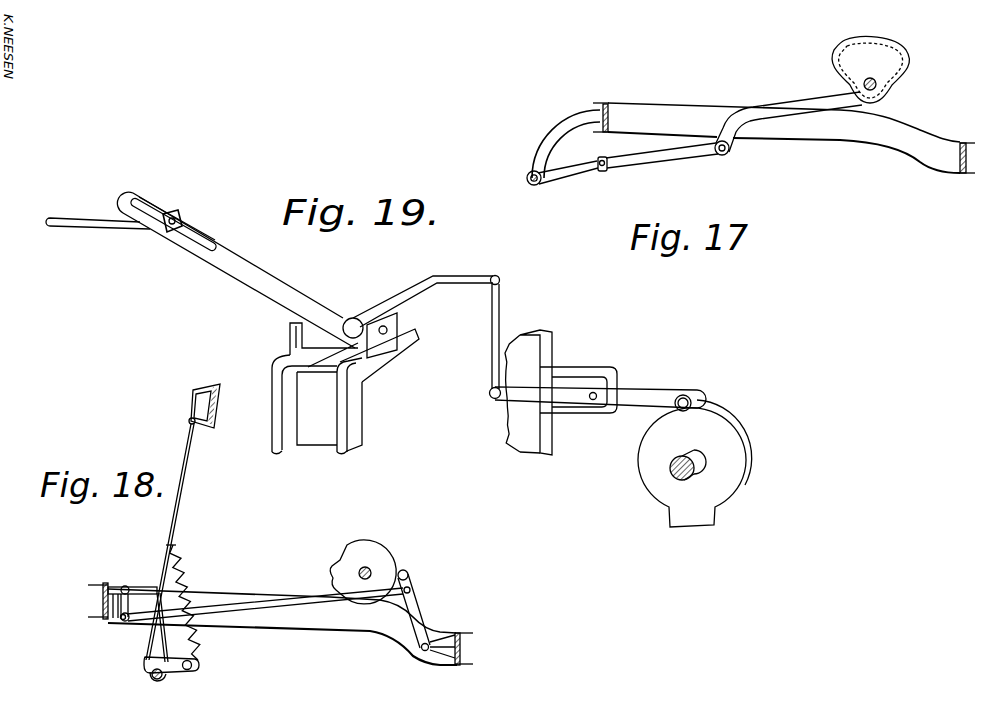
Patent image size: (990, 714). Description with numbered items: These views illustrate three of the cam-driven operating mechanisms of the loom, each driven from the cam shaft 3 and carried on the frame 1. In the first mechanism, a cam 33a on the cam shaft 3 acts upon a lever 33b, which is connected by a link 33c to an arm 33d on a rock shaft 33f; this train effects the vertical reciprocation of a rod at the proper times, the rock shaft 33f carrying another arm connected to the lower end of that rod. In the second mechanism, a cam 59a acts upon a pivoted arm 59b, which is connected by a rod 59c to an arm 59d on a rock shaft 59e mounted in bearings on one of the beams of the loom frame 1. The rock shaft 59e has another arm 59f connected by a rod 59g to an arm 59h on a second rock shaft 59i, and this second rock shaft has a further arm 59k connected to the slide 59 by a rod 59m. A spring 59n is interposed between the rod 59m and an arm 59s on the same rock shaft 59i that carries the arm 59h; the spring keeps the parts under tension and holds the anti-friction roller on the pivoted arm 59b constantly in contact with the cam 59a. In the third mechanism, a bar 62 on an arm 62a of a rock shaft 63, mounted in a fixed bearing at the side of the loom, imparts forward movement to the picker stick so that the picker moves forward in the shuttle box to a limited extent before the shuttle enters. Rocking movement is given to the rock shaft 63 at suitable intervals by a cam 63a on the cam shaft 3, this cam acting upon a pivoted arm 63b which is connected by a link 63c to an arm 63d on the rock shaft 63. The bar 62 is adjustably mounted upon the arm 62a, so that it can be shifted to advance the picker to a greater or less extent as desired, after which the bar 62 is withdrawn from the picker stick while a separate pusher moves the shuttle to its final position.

In FIG. 19, the frame 1 is at (523, 432).
In FIG. 17, the cam shaft 3 is at (870, 75).
In FIG. 19, the cam shaft 3 is at (672, 464).
In FIG. 18, the cam shaft 3 is at (366, 566).
In FIG. 17, the cam 33a is at (910, 63).
In FIG. 17, the lever 33b is at (805, 107).
In FIG. 17, the link 33c is at (607, 167).
In FIG. 17, the arm 33d is at (567, 177).
In FIG. 17, the rock shaft 33f is at (529, 181).
In FIG. 18, the slide 59 is at (195, 400).
In FIG. 18, the cam 59a is at (347, 553).
In FIG. 18, the pivoted arm 59b is at (417, 609).
In FIG. 18, the rod 59c is at (265, 606).
In FIG. 18, the arm 59d is at (116, 627).
In FIG. 18, the rock shaft 59e is at (123, 586).
In FIG. 18, the arm 59f is at (143, 587).
In FIG. 18, the rod 59g is at (158, 648).
In FIG. 18, the arm 59h is at (172, 675).
In FIG. 18, the rock shaft 59i is at (197, 667).
In FIG. 18, the arm 59k is at (152, 668).
In FIG. 18, the rod 59m is at (181, 513).
In FIG. 18, the spring 59n is at (198, 602).
In FIG. 18, the arm 59s is at (198, 662).
In FIG. 19, the bar 62 is at (73, 217).
In FIG. 19, the arm 62a is at (253, 268).
In FIG. 19, the rock shaft 63 is at (357, 318).
In FIG. 19, the cam 63a is at (695, 463).
In FIG. 19, the pivoted arm 63b is at (658, 388).
In FIG. 19, the link 63c is at (493, 349).
In FIG. 19, the arm 63d is at (452, 278).